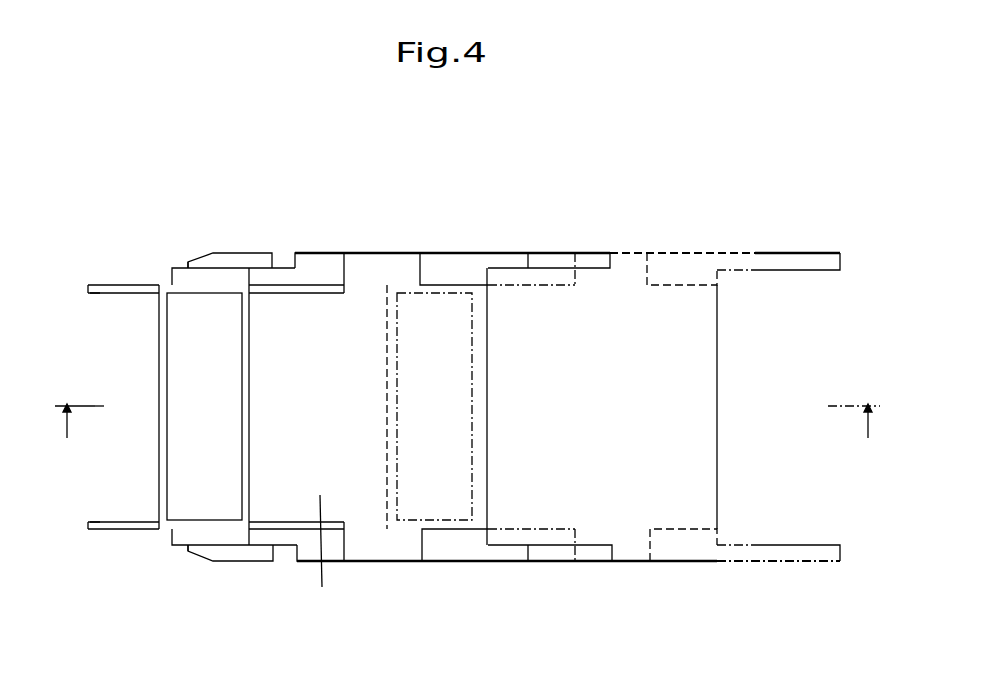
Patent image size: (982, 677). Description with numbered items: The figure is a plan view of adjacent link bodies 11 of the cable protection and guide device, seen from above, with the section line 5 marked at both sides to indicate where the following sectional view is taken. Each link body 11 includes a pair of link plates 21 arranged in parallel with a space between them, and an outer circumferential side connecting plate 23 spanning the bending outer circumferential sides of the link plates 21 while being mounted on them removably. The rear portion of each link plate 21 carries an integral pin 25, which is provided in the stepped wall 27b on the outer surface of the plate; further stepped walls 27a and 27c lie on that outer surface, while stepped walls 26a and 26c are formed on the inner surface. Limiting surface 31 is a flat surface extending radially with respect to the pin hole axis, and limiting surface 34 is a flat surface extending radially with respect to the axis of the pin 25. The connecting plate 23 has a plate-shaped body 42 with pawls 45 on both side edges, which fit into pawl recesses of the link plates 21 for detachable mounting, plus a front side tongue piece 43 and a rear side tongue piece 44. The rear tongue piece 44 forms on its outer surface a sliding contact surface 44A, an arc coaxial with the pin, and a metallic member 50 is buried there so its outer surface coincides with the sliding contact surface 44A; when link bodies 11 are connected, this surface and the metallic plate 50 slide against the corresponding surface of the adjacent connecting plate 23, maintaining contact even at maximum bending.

The section line of Fig. 5 is at (465, 427).
The link body 11 is at (307, 246).
The link plate 21 is at (102, 283).
The outer circumferential side connecting plate 23 is at (340, 282).
The pin 25 is at (260, 257).
The stepped wall 26a is at (800, 270).
The stepped wall 26c is at (108, 297).
The stepped wall 27a is at (327, 252).
The stepped wall 27b is at (210, 265).
The stepped wall 27c is at (128, 283).
The limiting surface 31 is at (487, 278).
The limiting surface 34 is at (247, 277).
The body 42 is at (608, 387).
The front side tongue piece 43 is at (695, 310).
The rear side tongue piece 44 is at (187, 285).
The sliding contact surface 44A is at (163, 472).
The pawl 45 is at (395, 262).
The metallic member 50 is at (180, 352).